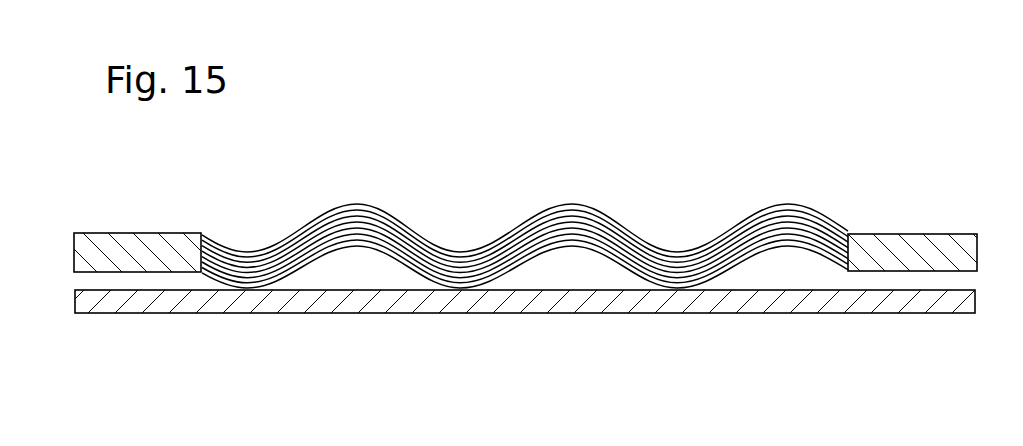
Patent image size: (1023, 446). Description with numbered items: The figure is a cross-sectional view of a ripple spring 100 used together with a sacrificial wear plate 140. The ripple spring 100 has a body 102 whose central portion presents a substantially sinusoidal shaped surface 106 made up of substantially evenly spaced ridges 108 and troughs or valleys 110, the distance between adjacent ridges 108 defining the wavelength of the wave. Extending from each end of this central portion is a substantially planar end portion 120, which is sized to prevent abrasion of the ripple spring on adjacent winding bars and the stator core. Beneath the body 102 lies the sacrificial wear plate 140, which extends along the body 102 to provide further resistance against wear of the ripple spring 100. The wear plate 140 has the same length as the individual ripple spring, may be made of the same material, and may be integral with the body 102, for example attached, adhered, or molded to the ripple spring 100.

The ripple spring 100 is at (195, 208).
The body 102 is at (156, 231).
The substantially sinusoidal shaped surface 106 is at (246, 251).
The ridges 108 is at (349, 201).
The troughs or valleys 110 is at (457, 251).
The substantially planar end portion 120 is at (118, 248).
The sacrificial wear plate 140 is at (475, 313).